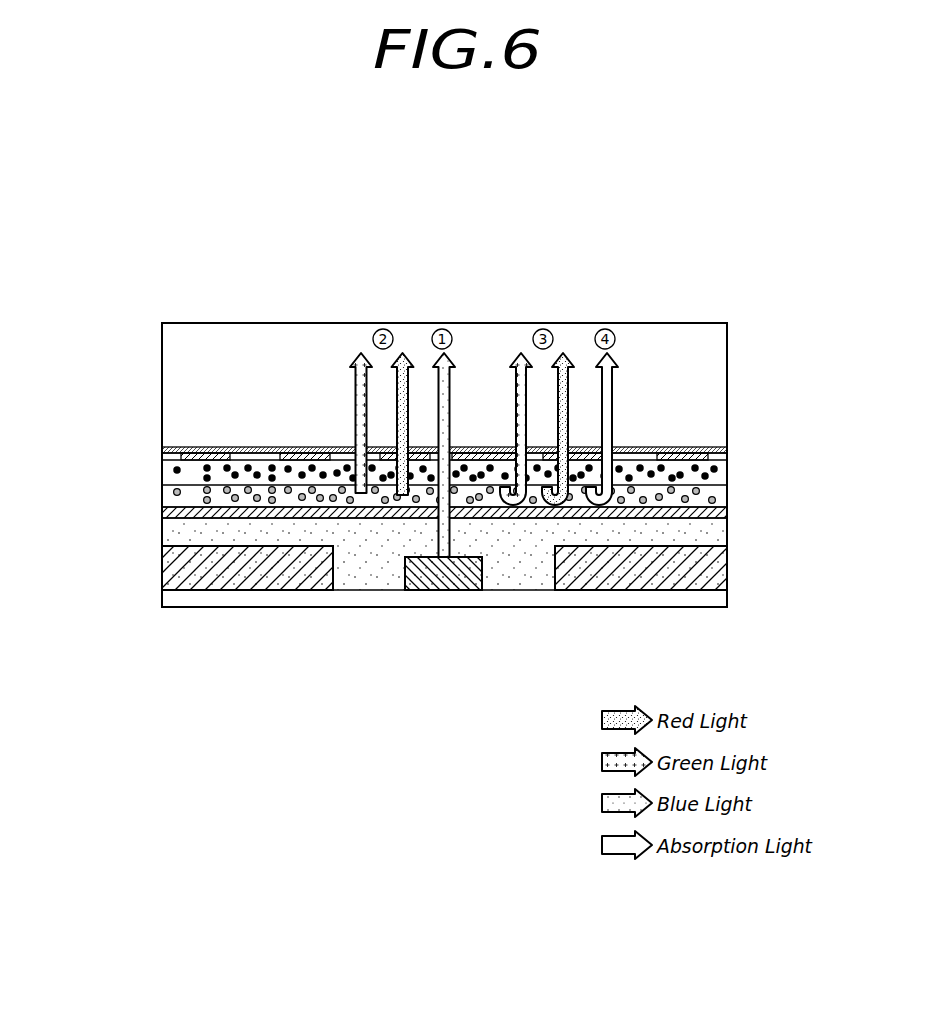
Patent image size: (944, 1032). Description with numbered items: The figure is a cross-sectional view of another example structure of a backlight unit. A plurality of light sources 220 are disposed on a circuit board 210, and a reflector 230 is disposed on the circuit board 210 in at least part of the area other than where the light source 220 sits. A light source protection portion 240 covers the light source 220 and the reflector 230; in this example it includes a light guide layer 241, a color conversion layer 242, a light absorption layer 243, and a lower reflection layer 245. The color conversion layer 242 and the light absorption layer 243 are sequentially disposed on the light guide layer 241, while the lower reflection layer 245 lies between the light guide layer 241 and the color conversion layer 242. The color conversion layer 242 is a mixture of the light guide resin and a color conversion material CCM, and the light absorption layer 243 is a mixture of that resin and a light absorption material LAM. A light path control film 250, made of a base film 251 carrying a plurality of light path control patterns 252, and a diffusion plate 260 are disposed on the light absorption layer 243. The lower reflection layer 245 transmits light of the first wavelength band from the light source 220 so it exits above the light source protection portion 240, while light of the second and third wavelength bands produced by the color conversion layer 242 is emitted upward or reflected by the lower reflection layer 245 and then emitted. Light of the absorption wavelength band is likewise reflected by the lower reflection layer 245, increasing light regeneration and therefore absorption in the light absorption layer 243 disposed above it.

The circuit board 210 is at (168, 598).
The light source 220 is at (443, 580).
The reflector 230 is at (168, 567).
The light source protection portion 240 is at (808, 460).
The light guide layer 241 is at (727, 532).
The color conversion layer 242 is at (727, 490).
The light absorption layer 243 is at (727, 470).
The lower reflection layer 245 is at (727, 512).
The light path control film 250 is at (92, 431).
The base film 251 is at (162, 451).
The light path control pattern 252 is at (195, 463).
The diffusion plate 260 is at (168, 391).
The light absorption material LAM is at (302, 478).
The color conversion material CCM is at (348, 497).